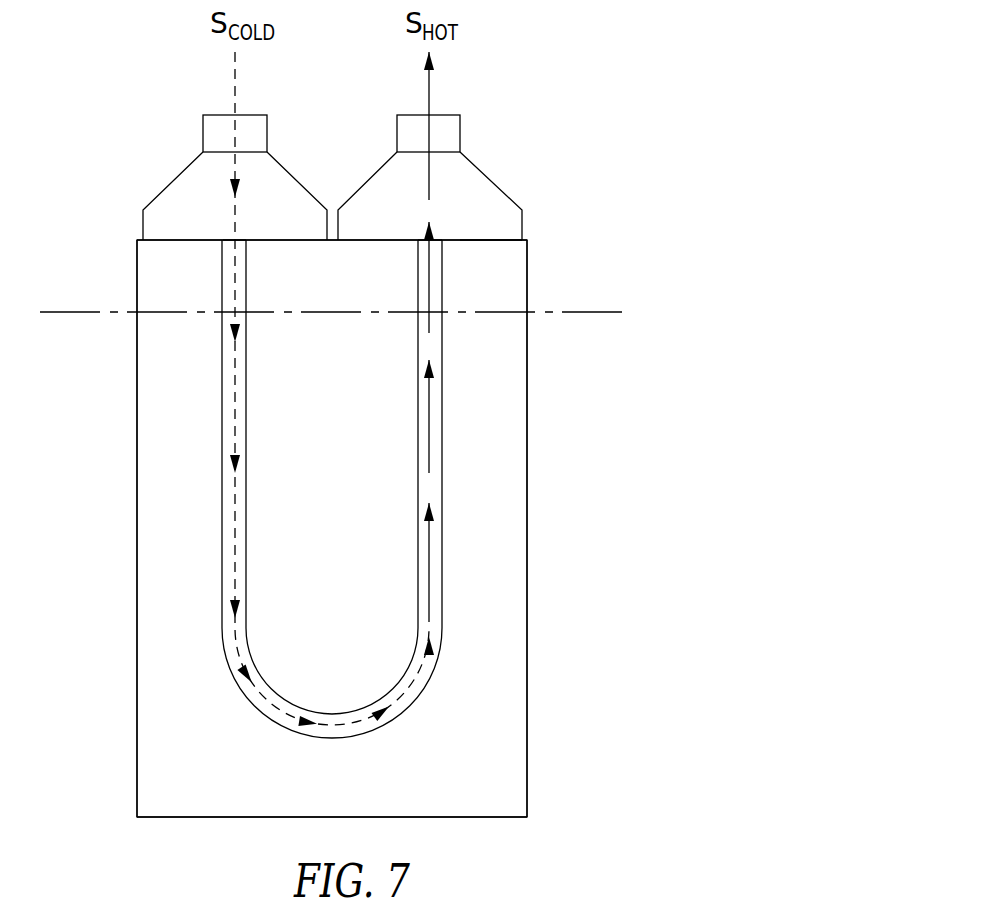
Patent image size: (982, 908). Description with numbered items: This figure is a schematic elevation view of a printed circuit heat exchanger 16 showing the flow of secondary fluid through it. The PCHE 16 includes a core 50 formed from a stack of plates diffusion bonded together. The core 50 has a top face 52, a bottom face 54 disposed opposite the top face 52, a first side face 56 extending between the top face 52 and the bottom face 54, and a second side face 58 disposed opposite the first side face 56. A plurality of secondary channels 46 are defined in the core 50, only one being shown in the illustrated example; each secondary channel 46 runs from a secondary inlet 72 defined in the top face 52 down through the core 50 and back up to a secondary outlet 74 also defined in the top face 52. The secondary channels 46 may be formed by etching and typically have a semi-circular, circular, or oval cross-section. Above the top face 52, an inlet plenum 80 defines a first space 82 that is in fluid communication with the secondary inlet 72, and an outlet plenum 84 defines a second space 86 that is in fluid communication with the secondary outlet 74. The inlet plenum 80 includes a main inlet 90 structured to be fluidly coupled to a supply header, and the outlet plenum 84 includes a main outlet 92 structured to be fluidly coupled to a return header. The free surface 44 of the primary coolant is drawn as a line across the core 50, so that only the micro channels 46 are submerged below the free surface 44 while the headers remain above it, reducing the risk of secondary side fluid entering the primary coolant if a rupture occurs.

The printed circuit heat exchanger 16 is at (582, 128).
The free surface 44 is at (574, 311).
The secondary channels 46 is at (442, 426).
The core 50 is at (508, 470).
The top face 52 is at (498, 238).
The bottom face 54 is at (266, 836).
The first side face 56 is at (118, 388).
The second side face 58 is at (545, 343).
The secondary inlet 72 is at (248, 232).
The secondary outlet 74 is at (452, 237).
The inlet plenum 80 is at (178, 176).
The first space 82 is at (178, 213).
The outlet plenum 84 is at (497, 186).
The second space 86 is at (380, 188).
The main inlet 90 is at (220, 108).
The main outlet 92 is at (450, 110).